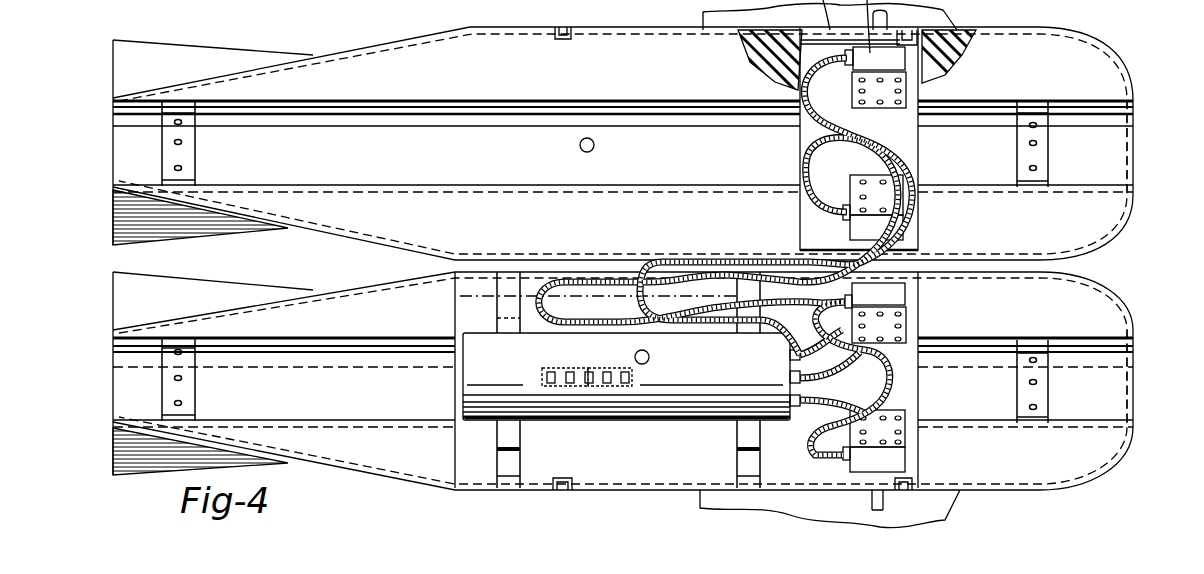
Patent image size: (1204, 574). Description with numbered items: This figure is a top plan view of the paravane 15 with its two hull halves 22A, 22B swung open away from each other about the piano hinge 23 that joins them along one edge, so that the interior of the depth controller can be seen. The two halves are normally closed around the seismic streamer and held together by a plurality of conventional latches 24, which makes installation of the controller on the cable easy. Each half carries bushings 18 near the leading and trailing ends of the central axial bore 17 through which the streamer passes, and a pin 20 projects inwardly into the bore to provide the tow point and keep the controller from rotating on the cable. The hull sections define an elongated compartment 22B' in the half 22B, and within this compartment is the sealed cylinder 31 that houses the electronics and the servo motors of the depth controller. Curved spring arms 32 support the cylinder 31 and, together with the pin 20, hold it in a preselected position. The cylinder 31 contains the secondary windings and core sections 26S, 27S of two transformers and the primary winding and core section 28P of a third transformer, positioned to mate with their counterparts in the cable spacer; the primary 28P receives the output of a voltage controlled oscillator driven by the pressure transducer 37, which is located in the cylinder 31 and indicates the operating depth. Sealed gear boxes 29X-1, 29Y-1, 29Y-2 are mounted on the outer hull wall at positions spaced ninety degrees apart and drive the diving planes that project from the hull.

The paravane 15 is at (1080, 46).
The central axial bore 17 is at (1120, 183).
The bushings 18 is at (160, 169).
The pin 20 is at (594, 152).
The hull half 22A is at (1127, 86).
The hull half 22B is at (623, 397).
The elongated compartment 22B' is at (682, 398).
The piano hinge 23 is at (657, 258).
The latches 24 is at (563, 26).
The secondary winding and core section 26S is at (620, 370).
The secondary winding and core section 27S is at (575, 370).
The primary winding and core section 28P is at (545, 377).
The sealed gear box 29X-1 is at (893, 318).
The sealed gear box 29Y-1 is at (897, 440).
The sealed gear box 29Y-2 is at (893, 207).
The sealed cylinder 31 is at (635, 412).
The curved spring arms 32 is at (533, 260).
The pressure transducer 37 is at (652, 355).